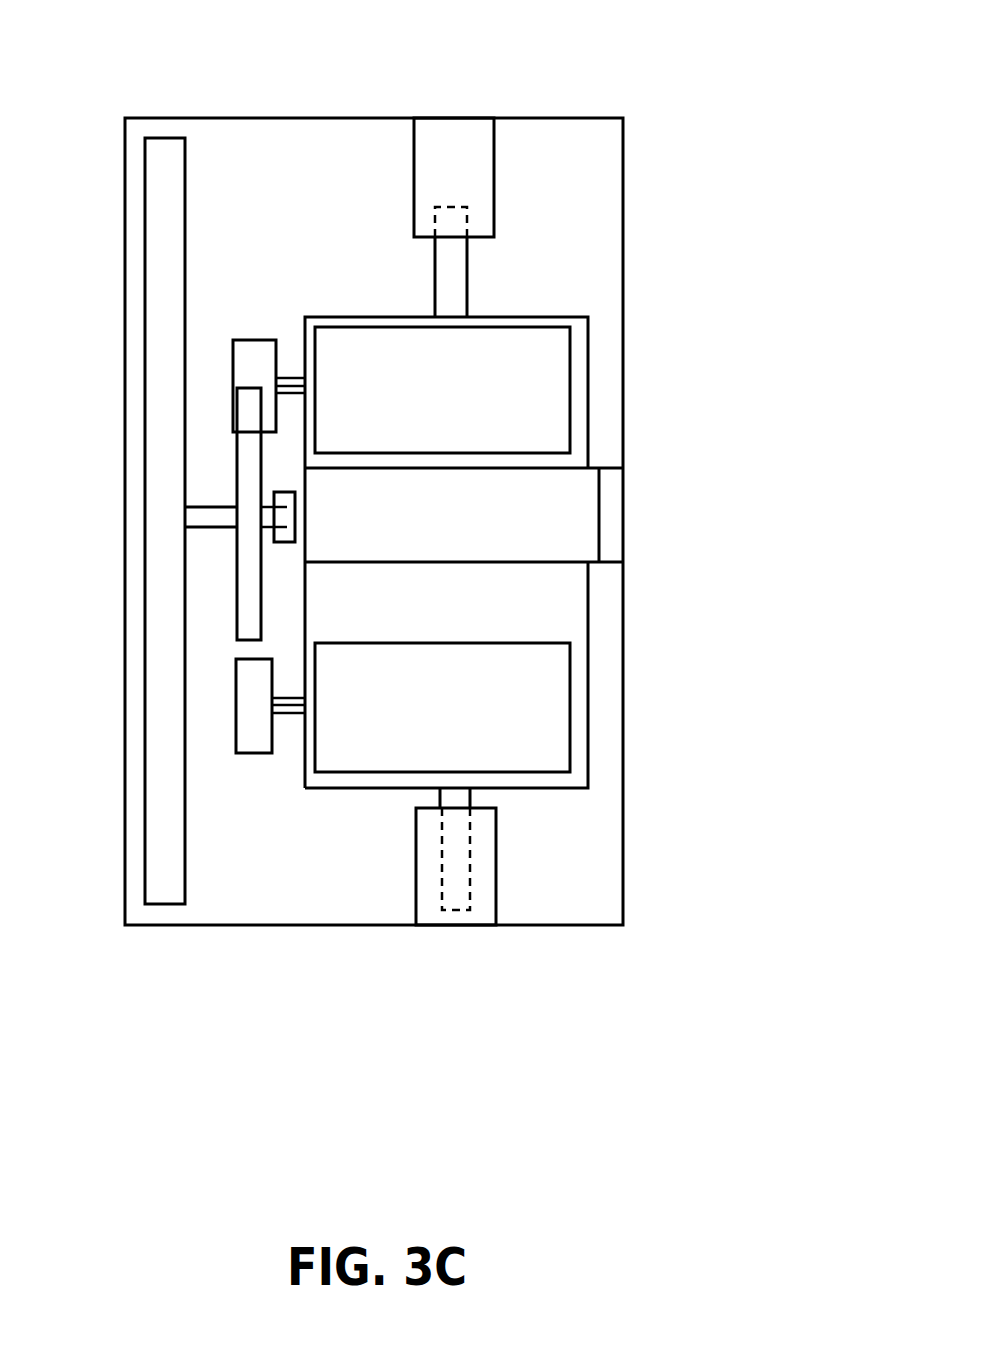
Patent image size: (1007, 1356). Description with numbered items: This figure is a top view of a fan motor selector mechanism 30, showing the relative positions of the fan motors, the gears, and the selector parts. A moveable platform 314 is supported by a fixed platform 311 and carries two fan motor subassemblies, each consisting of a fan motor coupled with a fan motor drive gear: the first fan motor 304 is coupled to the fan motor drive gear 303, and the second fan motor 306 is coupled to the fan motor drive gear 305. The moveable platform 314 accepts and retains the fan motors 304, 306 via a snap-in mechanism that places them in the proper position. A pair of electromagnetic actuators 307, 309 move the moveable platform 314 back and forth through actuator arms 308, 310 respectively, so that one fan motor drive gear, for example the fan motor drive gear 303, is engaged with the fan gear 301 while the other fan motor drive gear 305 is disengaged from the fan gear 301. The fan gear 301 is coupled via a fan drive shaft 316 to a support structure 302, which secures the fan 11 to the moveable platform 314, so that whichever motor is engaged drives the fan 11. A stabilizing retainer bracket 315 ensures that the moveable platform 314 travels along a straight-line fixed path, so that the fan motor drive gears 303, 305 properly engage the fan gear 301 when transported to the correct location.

The fan motor selector mechanism 30 is at (357, 25).
The fan 11 is at (172, 125).
The fan gear 301 is at (265, 586).
The support structure 302 is at (284, 489).
The fan motor drive gear 303 is at (256, 336).
The fan motor 304 is at (573, 362).
The fan motor drive gear 305 is at (246, 762).
The fan motor 306 is at (574, 702).
The electromagnetic actuator 307 is at (499, 152).
The actuator arm 308 is at (470, 274).
The electromagnetic actuator 309 is at (502, 899).
The actuator arm 310 is at (476, 797).
The fixed platform 311 is at (627, 892).
The moveable platform 314 is at (594, 414).
The stabilizing retainer bracket 315 is at (602, 519).
The fan drive shaft 316 is at (214, 534).